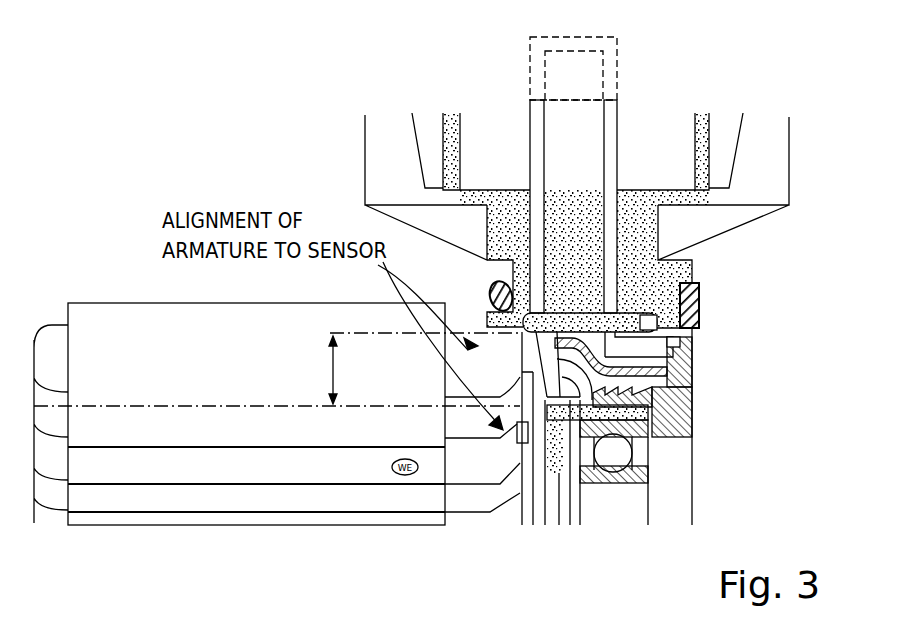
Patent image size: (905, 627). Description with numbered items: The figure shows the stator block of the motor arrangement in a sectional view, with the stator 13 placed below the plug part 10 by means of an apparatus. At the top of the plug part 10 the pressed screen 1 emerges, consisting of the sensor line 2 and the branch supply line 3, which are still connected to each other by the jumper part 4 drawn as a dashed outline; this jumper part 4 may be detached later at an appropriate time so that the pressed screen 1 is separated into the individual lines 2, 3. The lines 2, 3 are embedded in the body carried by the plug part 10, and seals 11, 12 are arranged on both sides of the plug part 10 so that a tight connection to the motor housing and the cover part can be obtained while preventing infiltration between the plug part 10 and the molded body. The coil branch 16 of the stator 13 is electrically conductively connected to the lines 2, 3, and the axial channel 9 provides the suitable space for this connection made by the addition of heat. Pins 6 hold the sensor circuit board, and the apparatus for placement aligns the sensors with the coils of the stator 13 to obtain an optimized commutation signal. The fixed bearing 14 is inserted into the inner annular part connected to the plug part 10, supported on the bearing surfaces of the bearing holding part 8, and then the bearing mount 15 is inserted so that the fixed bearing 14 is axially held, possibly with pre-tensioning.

The pressed screen 1 is at (560, 490).
The sensor line 2 is at (535, 132).
The branch supply line 3 is at (610, 127).
The jumper part 4 is at (619, 54).
The pins 6 is at (516, 440).
The bearing holding part 8 is at (603, 479).
The axial channel 9 is at (333, 370).
The plug part 10 is at (696, 222).
The seal 11 is at (491, 289).
The seal 12 is at (700, 308).
The stator 13 is at (105, 336).
The fixed bearing 14 is at (648, 443).
The bearing mount 15 is at (673, 421).
The coil branch 16 is at (683, 375).